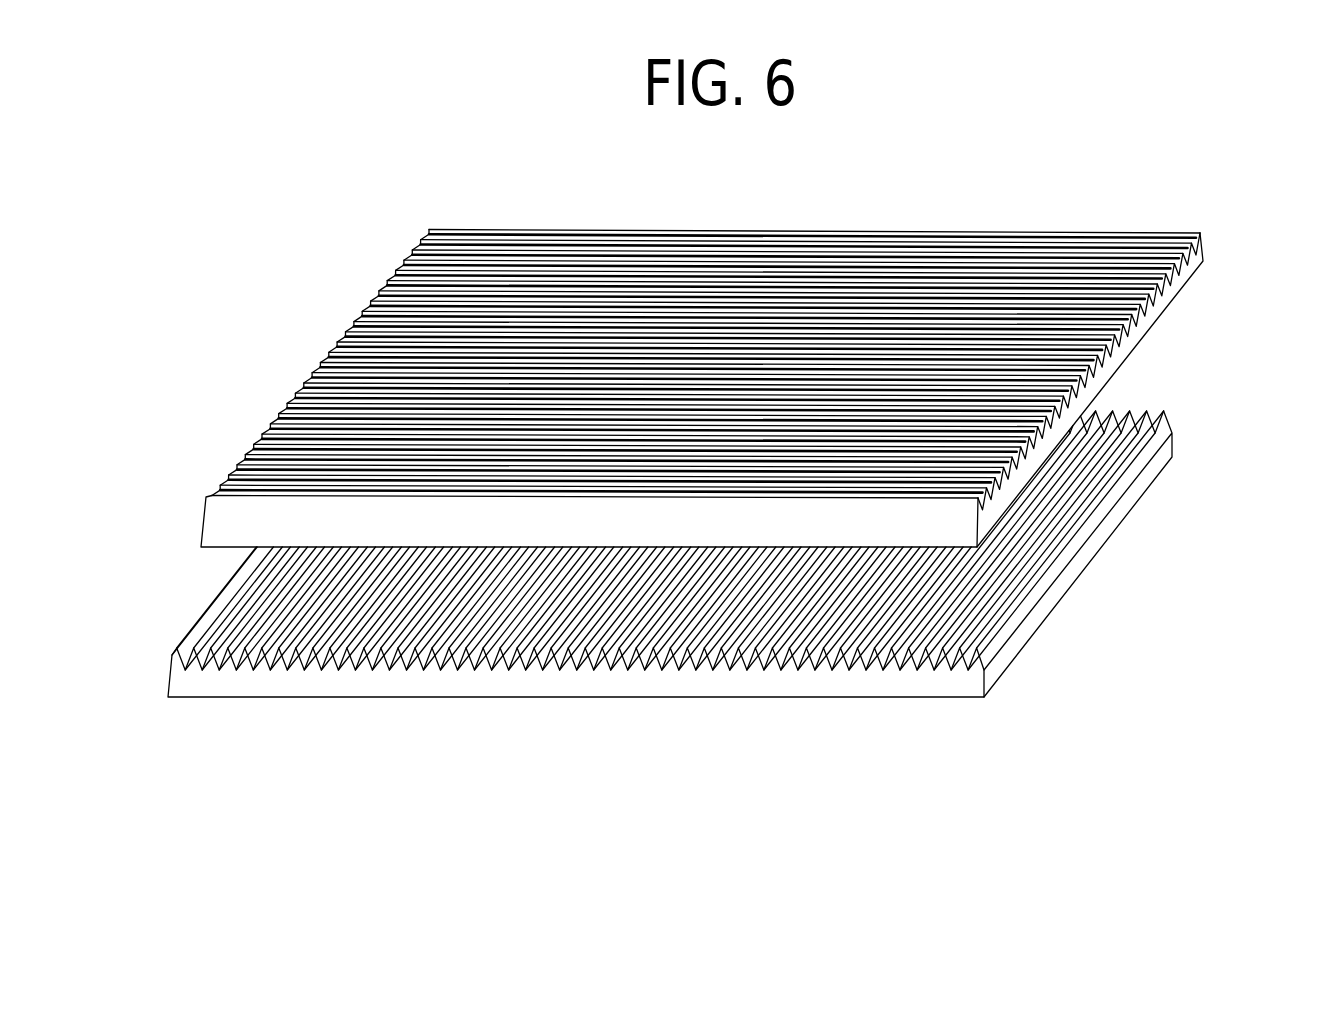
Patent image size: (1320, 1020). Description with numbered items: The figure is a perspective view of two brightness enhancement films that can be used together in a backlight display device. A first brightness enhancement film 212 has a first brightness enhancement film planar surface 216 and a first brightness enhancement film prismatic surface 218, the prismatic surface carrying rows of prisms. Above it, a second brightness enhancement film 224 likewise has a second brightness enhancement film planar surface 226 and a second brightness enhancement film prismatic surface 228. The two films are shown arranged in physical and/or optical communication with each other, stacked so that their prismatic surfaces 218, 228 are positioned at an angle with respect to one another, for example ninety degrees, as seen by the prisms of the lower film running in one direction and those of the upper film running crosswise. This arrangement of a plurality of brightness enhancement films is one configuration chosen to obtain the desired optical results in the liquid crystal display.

The first brightness enhancement film 212 is at (617, 608).
The first brightness enhancement film planar surface 216 is at (340, 697).
The first brightness enhancement film prismatic surface 218 is at (487, 650).
The second brightness enhancement film 224 is at (752, 349).
The second brightness enhancement film planar surface 226 is at (1168, 312).
The second brightness enhancement film prismatic surface 228 is at (1182, 240).